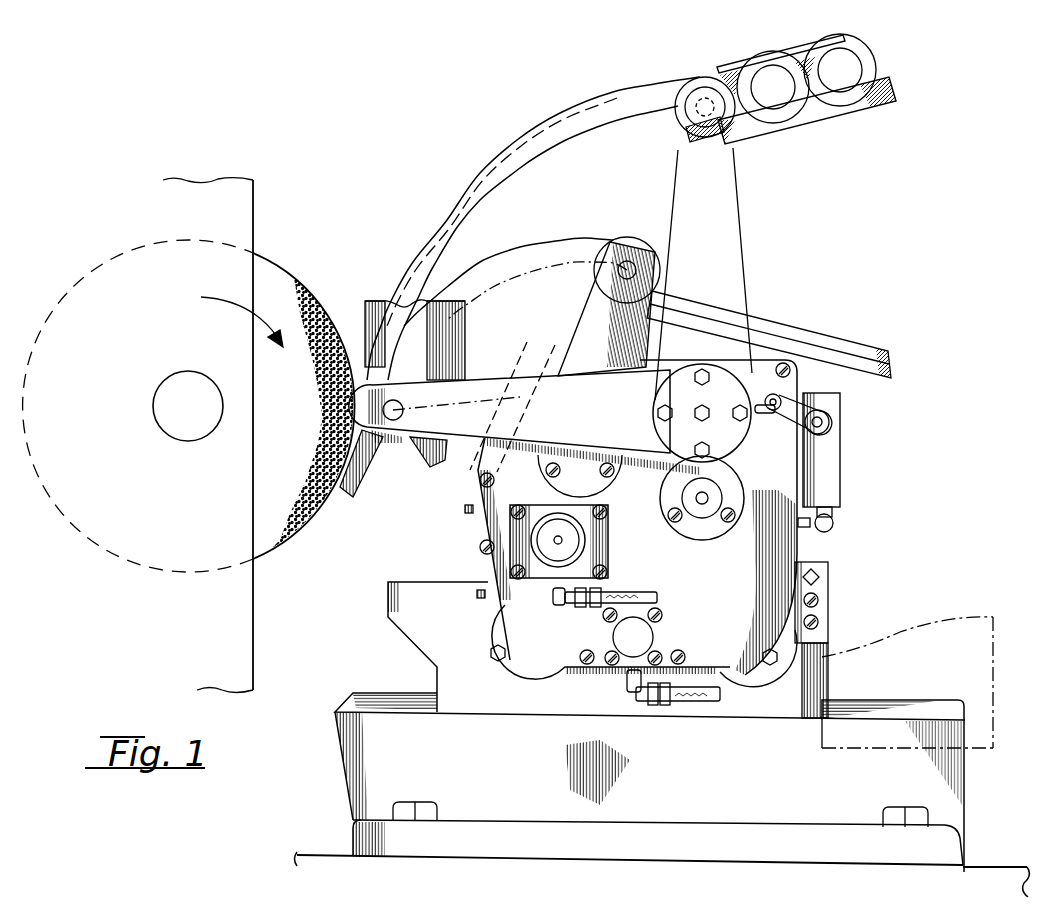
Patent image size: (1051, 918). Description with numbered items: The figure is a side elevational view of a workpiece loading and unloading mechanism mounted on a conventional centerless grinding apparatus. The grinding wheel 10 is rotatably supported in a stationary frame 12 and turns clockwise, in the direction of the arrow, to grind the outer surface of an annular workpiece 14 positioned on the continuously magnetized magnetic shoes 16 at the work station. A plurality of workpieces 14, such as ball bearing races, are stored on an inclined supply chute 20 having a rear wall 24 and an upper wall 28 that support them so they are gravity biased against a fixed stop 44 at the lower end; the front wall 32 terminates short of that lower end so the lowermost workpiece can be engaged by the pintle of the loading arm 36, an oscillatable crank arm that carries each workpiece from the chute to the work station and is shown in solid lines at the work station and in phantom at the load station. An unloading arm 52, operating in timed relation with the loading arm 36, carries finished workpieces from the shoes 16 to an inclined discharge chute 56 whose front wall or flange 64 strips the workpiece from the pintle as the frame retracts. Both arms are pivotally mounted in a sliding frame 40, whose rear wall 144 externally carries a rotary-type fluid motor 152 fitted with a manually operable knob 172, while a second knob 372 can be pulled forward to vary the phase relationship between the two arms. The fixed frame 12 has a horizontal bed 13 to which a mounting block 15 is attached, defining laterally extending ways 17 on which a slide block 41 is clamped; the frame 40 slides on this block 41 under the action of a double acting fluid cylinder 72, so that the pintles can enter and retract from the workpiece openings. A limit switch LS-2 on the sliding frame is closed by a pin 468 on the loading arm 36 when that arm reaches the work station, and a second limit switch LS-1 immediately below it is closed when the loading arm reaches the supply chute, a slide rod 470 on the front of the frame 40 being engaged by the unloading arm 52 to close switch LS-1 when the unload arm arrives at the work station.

The grinding wheel 10 is at (308, 524).
The stationary frame 12 is at (253, 633).
The bed 13 is at (990, 865).
The workpiece 14 is at (392, 447).
The mounting block 15 is at (965, 790).
The magnetic shoes 16 is at (420, 457).
The ways 17 is at (377, 697).
The supply chute 20 is at (777, 103).
The rear wall 24 is at (732, 63).
The upper wall 28 is at (783, 46).
The front wall 32 is at (797, 117).
The loading arm 36 is at (458, 380).
The sliding frame 40 is at (472, 530).
The slide block 41 is at (403, 630).
The fixed stop 44 is at (687, 138).
The unloading arm 52 is at (573, 330).
The discharge chute 56 is at (847, 340).
The front wall or flange 64 is at (780, 330).
The double acting fluid cylinder 72 is at (662, 629).
The rear wall 144 is at (678, 571).
The rotary-type fluid motor 152 is at (630, 530).
The manually operable knob 172 is at (537, 563).
The second knob 372 is at (718, 493).
The pin 468 is at (778, 395).
The slide rod 470 is at (805, 525).
The limit switch LS-1 is at (840, 525).
The limit switch LS-2 is at (841, 420).